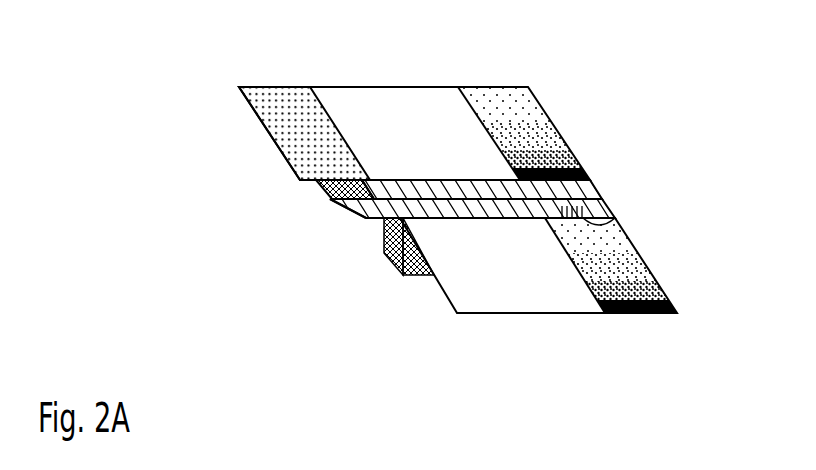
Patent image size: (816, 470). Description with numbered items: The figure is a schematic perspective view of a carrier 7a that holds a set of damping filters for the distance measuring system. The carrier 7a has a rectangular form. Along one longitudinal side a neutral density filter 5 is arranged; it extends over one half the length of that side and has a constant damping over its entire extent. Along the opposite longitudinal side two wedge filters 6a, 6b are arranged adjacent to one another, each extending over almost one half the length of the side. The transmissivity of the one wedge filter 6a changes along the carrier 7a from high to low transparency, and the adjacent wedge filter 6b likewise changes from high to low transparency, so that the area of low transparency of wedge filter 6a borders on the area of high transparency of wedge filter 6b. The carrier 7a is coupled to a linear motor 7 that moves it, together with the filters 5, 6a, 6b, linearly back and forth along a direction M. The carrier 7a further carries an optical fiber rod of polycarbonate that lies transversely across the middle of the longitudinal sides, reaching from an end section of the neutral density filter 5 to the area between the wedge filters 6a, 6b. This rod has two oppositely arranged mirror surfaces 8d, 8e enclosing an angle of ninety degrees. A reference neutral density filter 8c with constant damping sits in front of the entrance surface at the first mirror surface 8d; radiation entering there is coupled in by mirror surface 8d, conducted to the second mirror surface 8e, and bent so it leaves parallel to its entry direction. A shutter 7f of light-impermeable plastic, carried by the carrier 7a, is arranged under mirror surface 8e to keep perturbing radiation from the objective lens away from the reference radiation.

The carrier 7a is at (394, 103).
The neutral density filter 5 is at (280, 125).
The wedge filter 6a is at (527, 108).
The wedge filter 6b is at (627, 267).
The shutter 7f is at (600, 224).
The second mirror surface 8e is at (567, 193).
The reference neutral density filter 8c is at (338, 178).
The first mirror surface 8d is at (338, 216).
The linear motor 7 is at (395, 258).
The direction M is at (254, 182).